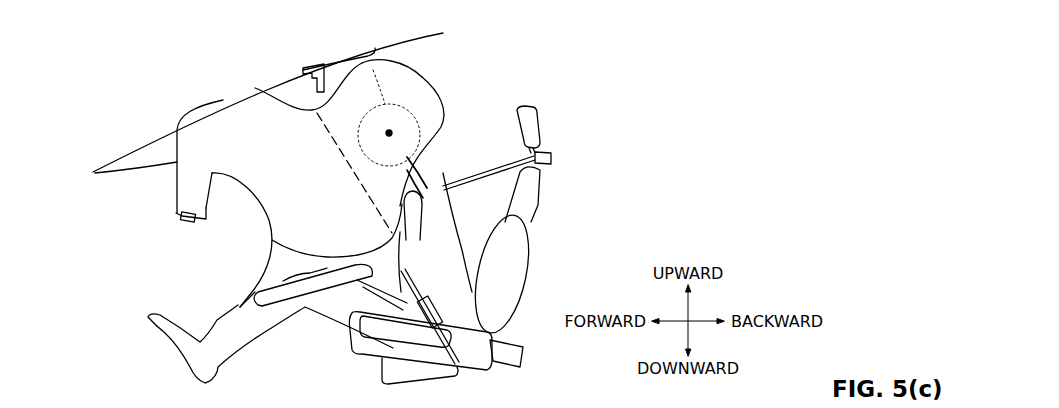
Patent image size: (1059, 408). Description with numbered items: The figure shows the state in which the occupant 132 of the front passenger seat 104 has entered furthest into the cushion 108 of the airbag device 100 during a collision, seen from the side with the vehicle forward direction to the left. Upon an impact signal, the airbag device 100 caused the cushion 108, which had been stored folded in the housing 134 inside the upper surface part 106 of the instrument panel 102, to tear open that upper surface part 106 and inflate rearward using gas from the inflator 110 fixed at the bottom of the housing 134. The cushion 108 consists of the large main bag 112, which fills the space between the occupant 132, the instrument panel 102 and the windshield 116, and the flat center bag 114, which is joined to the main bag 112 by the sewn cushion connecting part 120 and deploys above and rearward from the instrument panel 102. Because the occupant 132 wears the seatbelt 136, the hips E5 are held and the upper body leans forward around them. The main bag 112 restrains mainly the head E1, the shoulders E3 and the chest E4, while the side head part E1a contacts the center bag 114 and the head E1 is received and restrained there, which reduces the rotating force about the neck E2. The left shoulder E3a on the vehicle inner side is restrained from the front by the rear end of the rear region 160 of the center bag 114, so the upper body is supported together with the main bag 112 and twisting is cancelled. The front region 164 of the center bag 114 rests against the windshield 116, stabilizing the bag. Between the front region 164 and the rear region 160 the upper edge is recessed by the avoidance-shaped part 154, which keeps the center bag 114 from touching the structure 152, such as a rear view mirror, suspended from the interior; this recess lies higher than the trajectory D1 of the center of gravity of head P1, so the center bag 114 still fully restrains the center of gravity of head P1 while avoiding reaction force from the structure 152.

The airbag device 100 is at (180, 108).
The instrument panel 102 is at (263, 283).
The front passenger seat 104 is at (543, 172).
The upper surface part 106 is at (228, 170).
The cushion 108 is at (410, 75).
The inflator 110 is at (188, 225).
The main bag 112 is at (376, 67).
The center bag 114 is at (390, 68).
The windshield 116 is at (136, 150).
The cushion connecting part 120 is at (380, 230).
The occupant 132 is at (440, 217).
The housing 134 is at (207, 207).
The seatbelt 136 is at (523, 157).
The structure 152 is at (322, 66).
The avoidance-shaped part 154 is at (299, 103).
The rear region 160 is at (418, 73).
The front region 164 is at (245, 113).
The trajectory of the center of gravity of head D1 is at (342, 150).
The center of gravity of head P1 is at (392, 133).
The side head part E1a is at (368, 140).
The head E1 is at (410, 128).
The neck E2 is at (420, 161).
The shoulders E3 is at (425, 192).
The left shoulder E3a is at (453, 184).
The chest E4 is at (433, 237).
The hips E5 is at (453, 300).